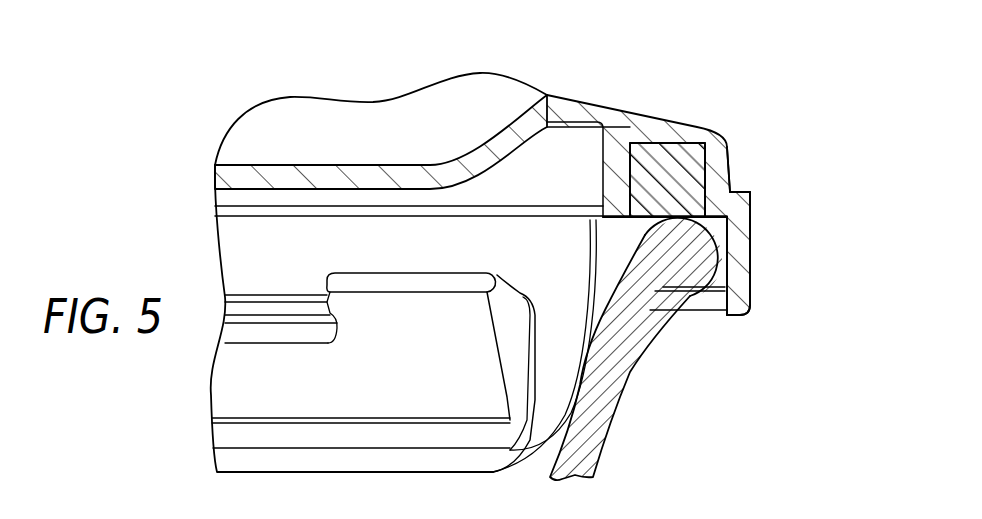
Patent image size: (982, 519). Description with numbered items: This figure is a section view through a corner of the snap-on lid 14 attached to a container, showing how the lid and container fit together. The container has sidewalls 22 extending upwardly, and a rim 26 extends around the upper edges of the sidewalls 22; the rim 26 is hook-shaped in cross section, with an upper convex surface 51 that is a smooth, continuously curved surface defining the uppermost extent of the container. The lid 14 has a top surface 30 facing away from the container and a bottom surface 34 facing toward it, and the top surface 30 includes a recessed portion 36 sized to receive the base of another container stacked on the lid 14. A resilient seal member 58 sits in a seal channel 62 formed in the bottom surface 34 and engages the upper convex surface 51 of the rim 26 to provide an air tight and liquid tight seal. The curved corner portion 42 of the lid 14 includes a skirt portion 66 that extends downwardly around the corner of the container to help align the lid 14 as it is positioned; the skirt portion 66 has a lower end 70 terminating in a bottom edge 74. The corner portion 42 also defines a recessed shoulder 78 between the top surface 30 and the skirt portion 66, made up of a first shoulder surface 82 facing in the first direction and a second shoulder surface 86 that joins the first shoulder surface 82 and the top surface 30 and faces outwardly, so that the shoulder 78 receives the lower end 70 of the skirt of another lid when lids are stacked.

The snap-on lid 14 is at (328, 190).
The sidewalls 22 is at (600, 372).
The rim 26 is at (692, 268).
The top surface 30 is at (647, 111).
The bottom surface 34 is at (380, 190).
The recessed portion 36 is at (450, 157).
The corner portion 42 is at (663, 132).
The upper convex surface 51 is at (717, 237).
The seal member 58 is at (650, 193).
The seal channel 62 is at (655, 150).
The skirt portion 66 is at (740, 252).
The lower end 70 is at (727, 297).
The bottom edge 74 is at (727, 300).
The recessed shoulder 78 is at (737, 172).
The first shoulder surface 82 is at (751, 181).
The second shoulder surface 86 is at (733, 150).